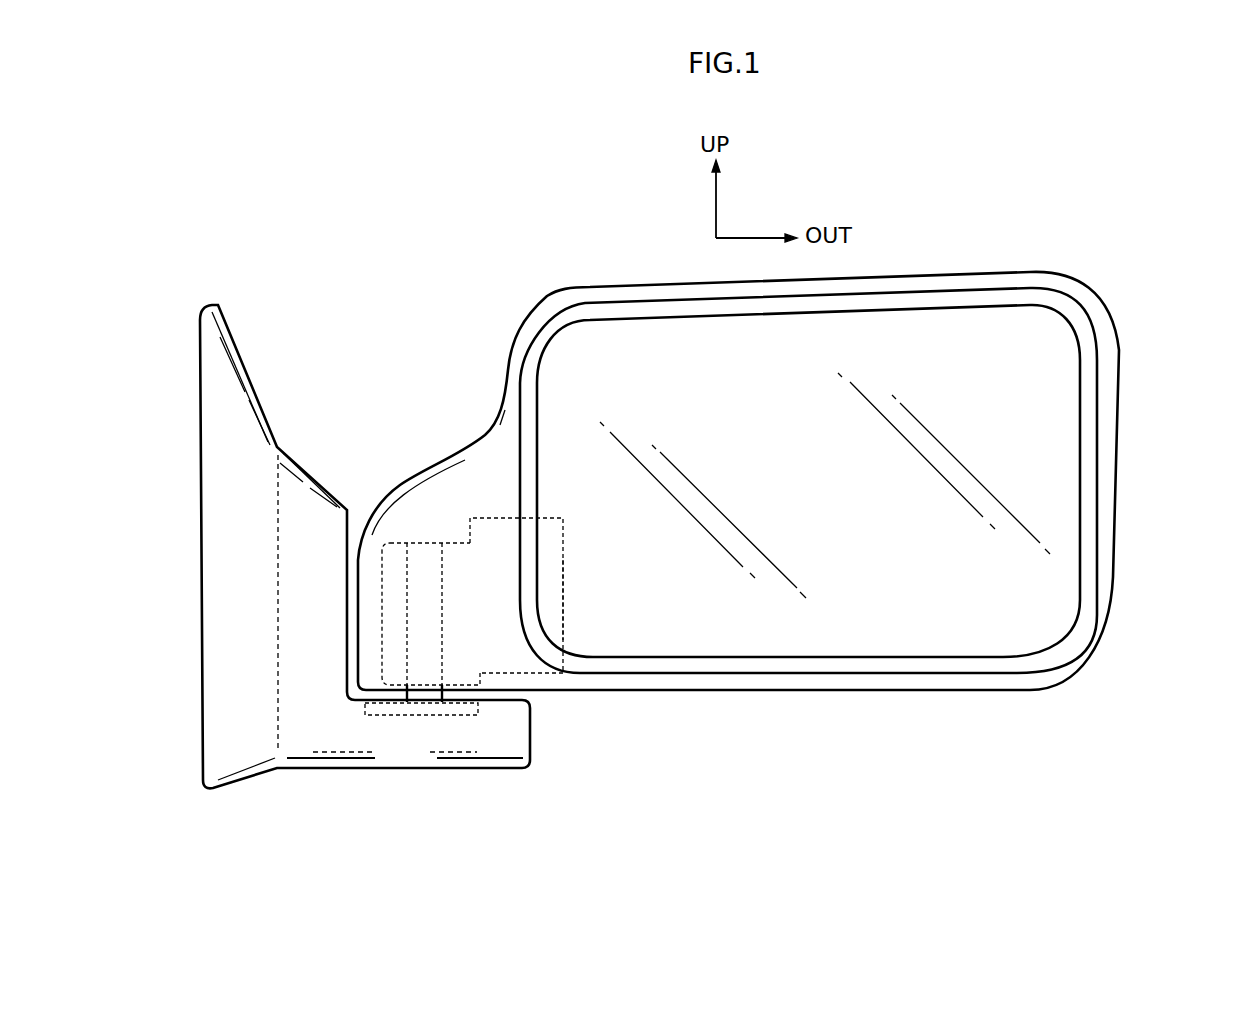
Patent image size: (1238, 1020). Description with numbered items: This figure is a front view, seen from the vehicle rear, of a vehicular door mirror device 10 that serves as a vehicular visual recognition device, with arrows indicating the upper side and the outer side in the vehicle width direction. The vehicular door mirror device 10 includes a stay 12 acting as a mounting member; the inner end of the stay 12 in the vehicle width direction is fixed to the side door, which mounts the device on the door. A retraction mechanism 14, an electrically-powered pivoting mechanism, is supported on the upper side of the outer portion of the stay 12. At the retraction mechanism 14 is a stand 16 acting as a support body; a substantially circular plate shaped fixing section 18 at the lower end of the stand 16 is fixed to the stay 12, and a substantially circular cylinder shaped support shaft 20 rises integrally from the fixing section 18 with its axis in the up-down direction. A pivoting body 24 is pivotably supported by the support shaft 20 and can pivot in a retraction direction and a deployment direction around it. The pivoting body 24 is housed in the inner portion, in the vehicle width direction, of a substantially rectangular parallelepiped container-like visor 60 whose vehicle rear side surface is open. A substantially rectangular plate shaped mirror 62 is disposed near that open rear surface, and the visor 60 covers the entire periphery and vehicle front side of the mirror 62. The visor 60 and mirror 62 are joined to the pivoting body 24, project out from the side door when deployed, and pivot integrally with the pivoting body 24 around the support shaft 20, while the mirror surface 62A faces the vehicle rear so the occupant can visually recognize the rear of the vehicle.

The vehicular door mirror device 10 is at (384, 303).
The stay 12 is at (263, 411).
The retraction mechanism 14 is at (575, 540).
The stand 16 is at (394, 611).
The fixing section 18 is at (430, 717).
The support shaft 20 is at (442, 632).
The pivoting body 24 is at (565, 597).
The visor 60 is at (1122, 482).
The mirror 62 is at (1062, 568).
The mirror surface 62A is at (910, 624).